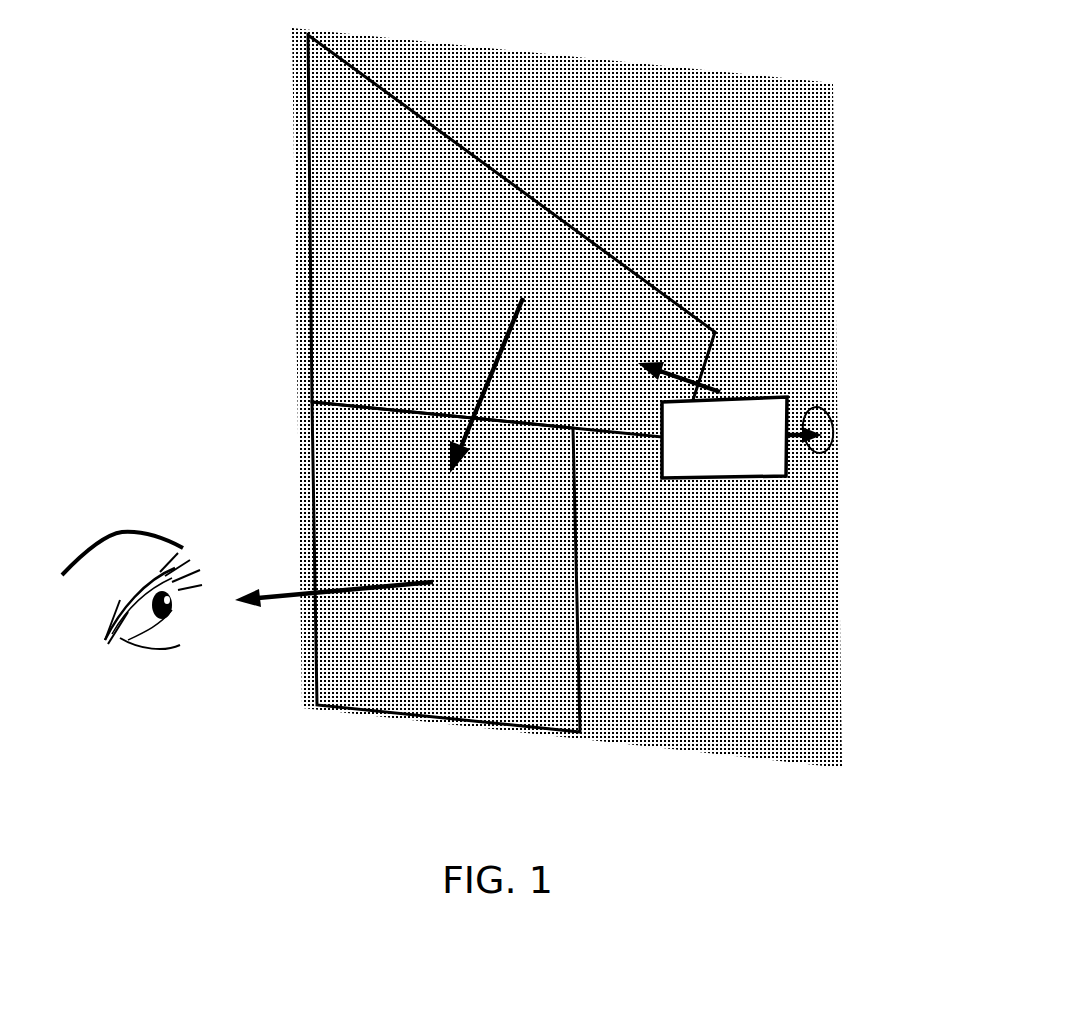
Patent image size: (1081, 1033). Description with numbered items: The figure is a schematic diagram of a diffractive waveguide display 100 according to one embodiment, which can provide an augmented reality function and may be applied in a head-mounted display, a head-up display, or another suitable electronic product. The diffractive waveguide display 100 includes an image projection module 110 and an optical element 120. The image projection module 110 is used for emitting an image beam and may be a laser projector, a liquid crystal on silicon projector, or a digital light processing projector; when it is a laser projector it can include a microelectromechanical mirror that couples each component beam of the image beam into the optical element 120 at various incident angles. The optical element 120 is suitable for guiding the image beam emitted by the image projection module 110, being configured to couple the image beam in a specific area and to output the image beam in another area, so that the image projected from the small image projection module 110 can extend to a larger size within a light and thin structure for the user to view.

The diffractive waveguide display 100 is at (571, 398).
The image projection module 110 is at (763, 468).
The optical element 120 is at (810, 258).